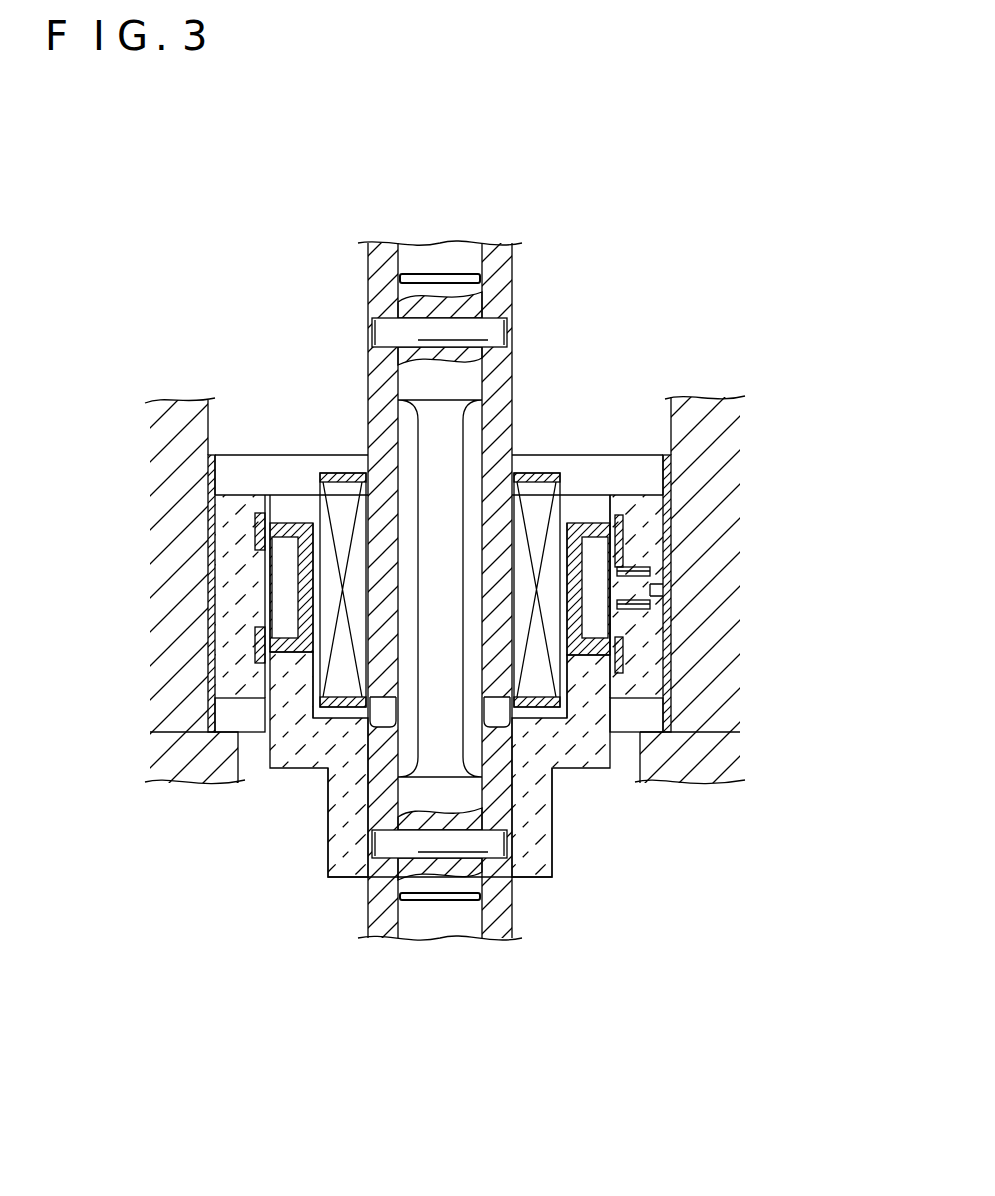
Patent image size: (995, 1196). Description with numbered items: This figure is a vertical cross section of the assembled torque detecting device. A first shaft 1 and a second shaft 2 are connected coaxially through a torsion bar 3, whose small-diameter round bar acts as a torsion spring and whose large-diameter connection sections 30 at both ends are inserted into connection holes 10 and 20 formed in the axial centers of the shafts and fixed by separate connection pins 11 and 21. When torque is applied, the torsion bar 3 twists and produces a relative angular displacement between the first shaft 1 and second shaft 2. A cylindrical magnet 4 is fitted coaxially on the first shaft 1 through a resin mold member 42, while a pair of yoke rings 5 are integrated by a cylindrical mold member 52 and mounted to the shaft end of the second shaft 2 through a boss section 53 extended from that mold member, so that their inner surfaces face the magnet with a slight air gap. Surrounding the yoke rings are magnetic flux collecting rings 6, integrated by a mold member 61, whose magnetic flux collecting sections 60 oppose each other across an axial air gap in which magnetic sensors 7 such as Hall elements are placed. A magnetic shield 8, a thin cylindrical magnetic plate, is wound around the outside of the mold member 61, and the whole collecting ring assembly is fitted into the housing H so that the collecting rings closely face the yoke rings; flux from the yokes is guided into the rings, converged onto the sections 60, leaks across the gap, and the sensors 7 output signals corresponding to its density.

The first shaft 1 is at (497, 288).
The connection hole 10 is at (463, 250).
The connection pin 11 is at (505, 332).
The second shaft 2 is at (508, 910).
The connection hole 20 is at (472, 938).
The connection pin 21 is at (372, 892).
The torsion bar 3 is at (450, 438).
The connection section 30 is at (398, 388).
The cylindrical magnet 4 is at (287, 523).
The mold member 42 is at (332, 473).
The yoke ring 5 is at (270, 497).
The mold member 52 is at (300, 612).
The boss section 53 is at (545, 838).
The magnetic flux collecting ring 6 is at (257, 530).
The magnetic flux collecting section 60 is at (650, 572).
The mold member 61 is at (232, 570).
The magnetic sensor 7 is at (655, 590).
The magnetic shield 8 is at (672, 715).
The housing H is at (690, 398).